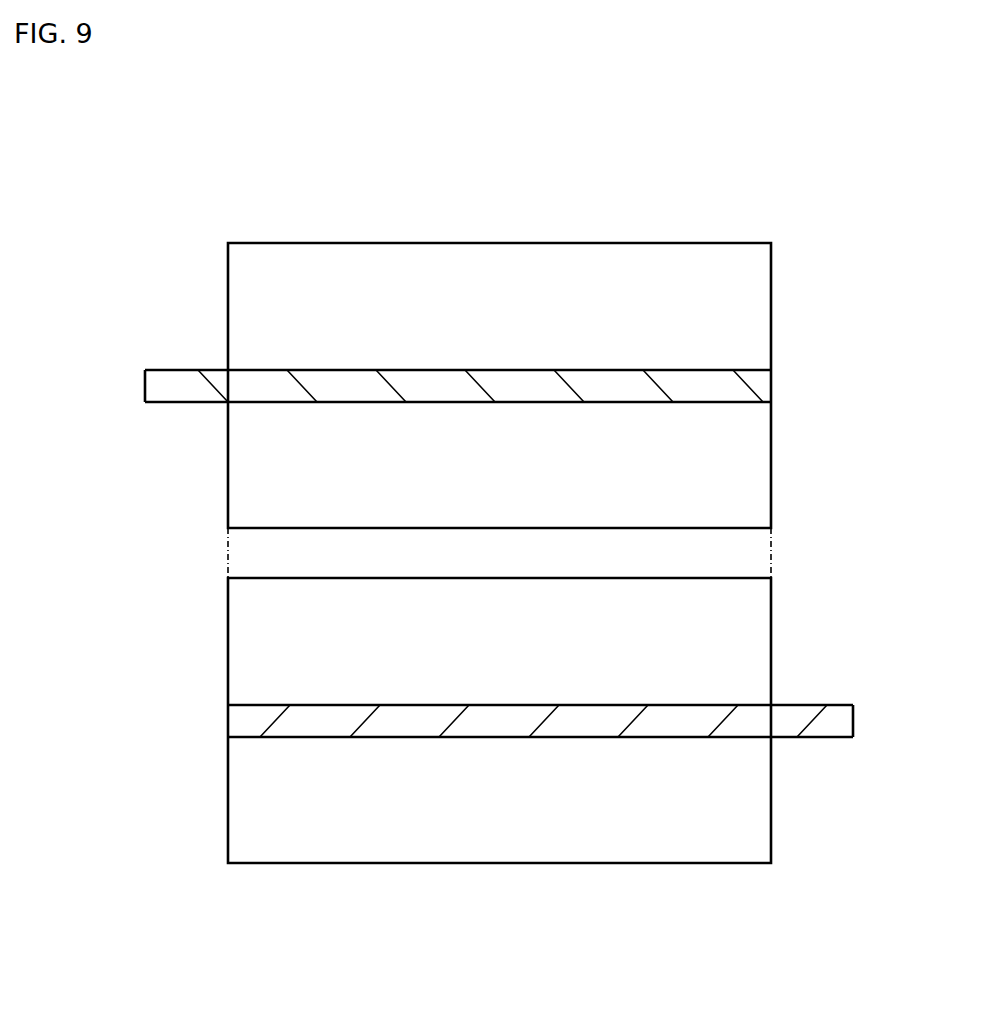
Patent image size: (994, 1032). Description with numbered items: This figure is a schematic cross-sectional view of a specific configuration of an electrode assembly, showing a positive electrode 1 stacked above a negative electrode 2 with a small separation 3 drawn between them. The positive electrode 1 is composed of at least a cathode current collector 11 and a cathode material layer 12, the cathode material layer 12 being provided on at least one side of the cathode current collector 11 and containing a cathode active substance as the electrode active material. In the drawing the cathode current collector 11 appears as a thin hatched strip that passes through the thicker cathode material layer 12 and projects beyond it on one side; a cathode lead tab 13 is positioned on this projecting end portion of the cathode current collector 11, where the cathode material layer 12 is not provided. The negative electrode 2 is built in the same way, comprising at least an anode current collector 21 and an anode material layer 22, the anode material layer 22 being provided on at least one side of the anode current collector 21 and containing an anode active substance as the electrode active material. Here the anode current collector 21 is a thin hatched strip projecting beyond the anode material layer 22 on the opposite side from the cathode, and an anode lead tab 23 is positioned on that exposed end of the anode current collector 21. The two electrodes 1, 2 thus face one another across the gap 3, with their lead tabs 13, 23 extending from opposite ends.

The positive electrode 1 is at (448, 385).
The cathode current collector 11 is at (417, 437).
The cathode material layer 12 is at (267, 327).
The cathode lead tab 13 is at (178, 392).
The negative electrode 2 is at (551, 720).
The anode current collector 21 is at (583, 770).
The anode material layer 22 is at (732, 655).
The anode lead tab 23 is at (818, 725).
The gap 3 is at (750, 553).